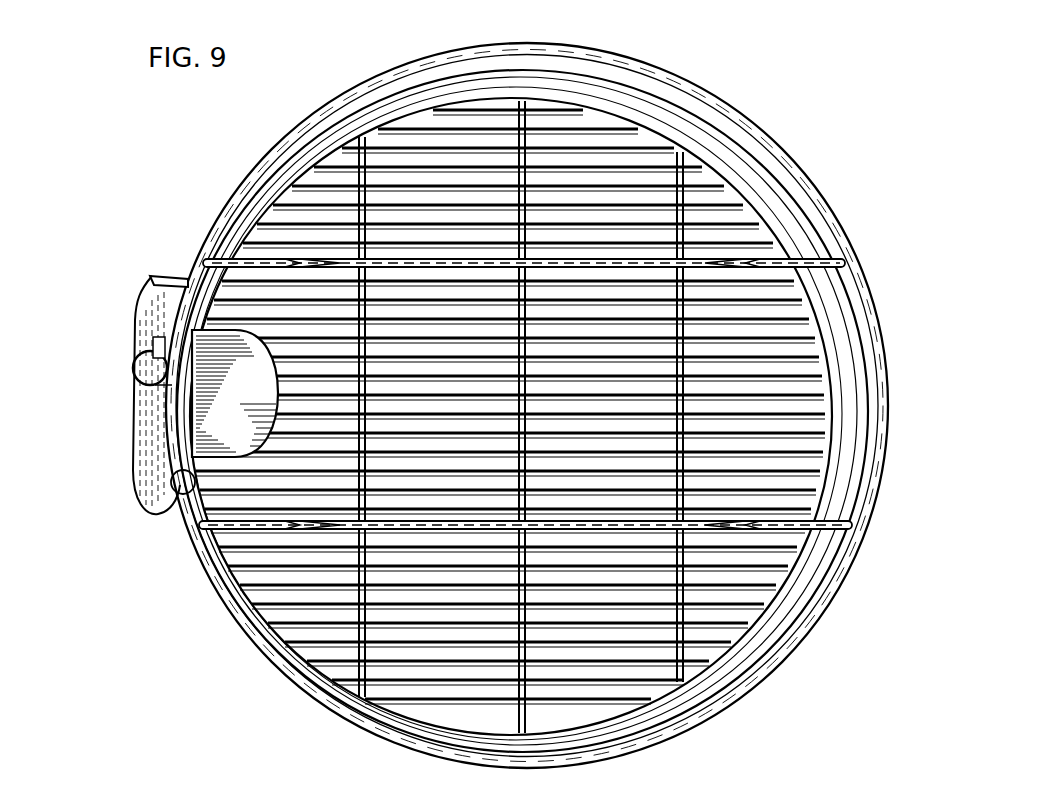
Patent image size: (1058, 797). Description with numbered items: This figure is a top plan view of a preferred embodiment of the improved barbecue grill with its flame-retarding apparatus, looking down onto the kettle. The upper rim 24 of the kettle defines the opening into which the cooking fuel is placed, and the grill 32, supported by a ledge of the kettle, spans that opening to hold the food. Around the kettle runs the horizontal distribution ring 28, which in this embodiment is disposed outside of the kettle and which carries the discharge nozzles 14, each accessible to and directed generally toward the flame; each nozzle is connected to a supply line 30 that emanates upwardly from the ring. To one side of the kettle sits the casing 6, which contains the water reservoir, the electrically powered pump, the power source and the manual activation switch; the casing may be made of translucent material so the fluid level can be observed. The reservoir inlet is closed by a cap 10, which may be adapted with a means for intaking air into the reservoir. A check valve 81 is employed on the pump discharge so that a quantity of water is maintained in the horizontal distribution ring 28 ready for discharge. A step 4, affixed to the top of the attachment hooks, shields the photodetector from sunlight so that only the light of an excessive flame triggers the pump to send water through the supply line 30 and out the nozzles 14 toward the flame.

The step 4 is at (250, 394).
The casing 6 is at (135, 318).
The cap 10 is at (174, 482).
The discharge nozzle 14 is at (250, 258).
The upper rim 24 is at (265, 188).
The horizontal distribution ring 28 is at (680, 92).
The supply line 30 is at (136, 355).
The grill 32 is at (325, 640).
The check valve 81 is at (150, 330).